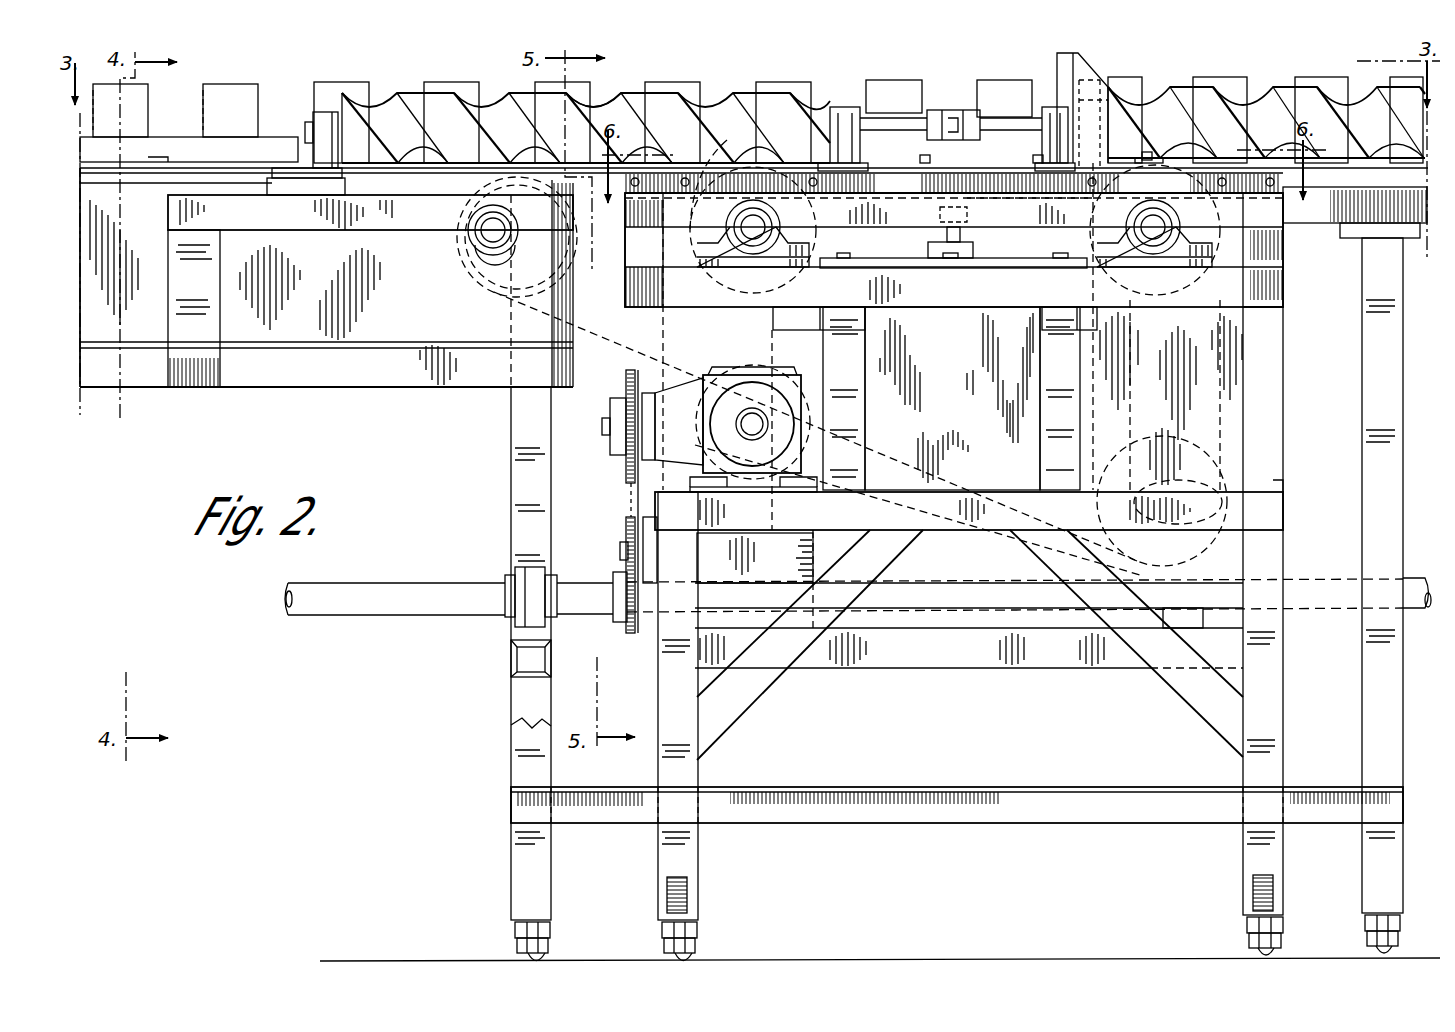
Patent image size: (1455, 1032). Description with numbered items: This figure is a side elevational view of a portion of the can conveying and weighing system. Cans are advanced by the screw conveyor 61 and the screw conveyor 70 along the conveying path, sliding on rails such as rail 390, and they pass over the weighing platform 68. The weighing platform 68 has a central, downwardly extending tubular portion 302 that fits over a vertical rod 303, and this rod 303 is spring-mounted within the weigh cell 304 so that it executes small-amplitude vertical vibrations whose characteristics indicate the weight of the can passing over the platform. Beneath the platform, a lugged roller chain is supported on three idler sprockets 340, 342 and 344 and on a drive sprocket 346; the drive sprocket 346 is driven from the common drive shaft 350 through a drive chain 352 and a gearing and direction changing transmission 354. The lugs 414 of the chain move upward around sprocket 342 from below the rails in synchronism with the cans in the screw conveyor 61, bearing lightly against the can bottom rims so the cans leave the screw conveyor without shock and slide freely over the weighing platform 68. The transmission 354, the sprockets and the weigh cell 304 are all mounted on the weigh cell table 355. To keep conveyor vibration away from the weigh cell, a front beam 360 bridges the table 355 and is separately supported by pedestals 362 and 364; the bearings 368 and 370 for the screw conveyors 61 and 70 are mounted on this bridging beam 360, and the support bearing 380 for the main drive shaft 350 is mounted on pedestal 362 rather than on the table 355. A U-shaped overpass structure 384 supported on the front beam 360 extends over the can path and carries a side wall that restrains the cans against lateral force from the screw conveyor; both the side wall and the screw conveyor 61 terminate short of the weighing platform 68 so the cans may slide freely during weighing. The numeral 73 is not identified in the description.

The screw conveyor 61 is at (1283, 88).
The weighing platform 68 is at (1000, 203).
The screw conveyor 70 is at (625, 90).
The screw flight 73 is at (378, 158).
The tubular portion 302 is at (940, 216).
The vertical rod 303 is at (963, 238).
The weigh cell 304 is at (982, 367).
The idler sprocket 340 is at (816, 289).
The idler sprocket 342 is at (1093, 284).
The idler sprocket 344 is at (1172, 437).
The drive sprocket 346 is at (808, 427).
The common drive shaft 350 is at (397, 617).
The drive chain 352 is at (623, 490).
The gearing and direction changing transmission 354 is at (663, 388).
The weigh cell table 355 is at (943, 662).
The front beam 360 is at (443, 223).
The pedestal 362 is at (510, 456).
The pedestal 364 is at (1367, 385).
The bearing 368 is at (1053, 108).
The bearing 370 is at (313, 112).
The support bearing 380 is at (518, 563).
The U-shaped overpass structure 384 is at (1090, 70).
The rail 390 is at (727, 140).
The lugs 414 is at (922, 158).